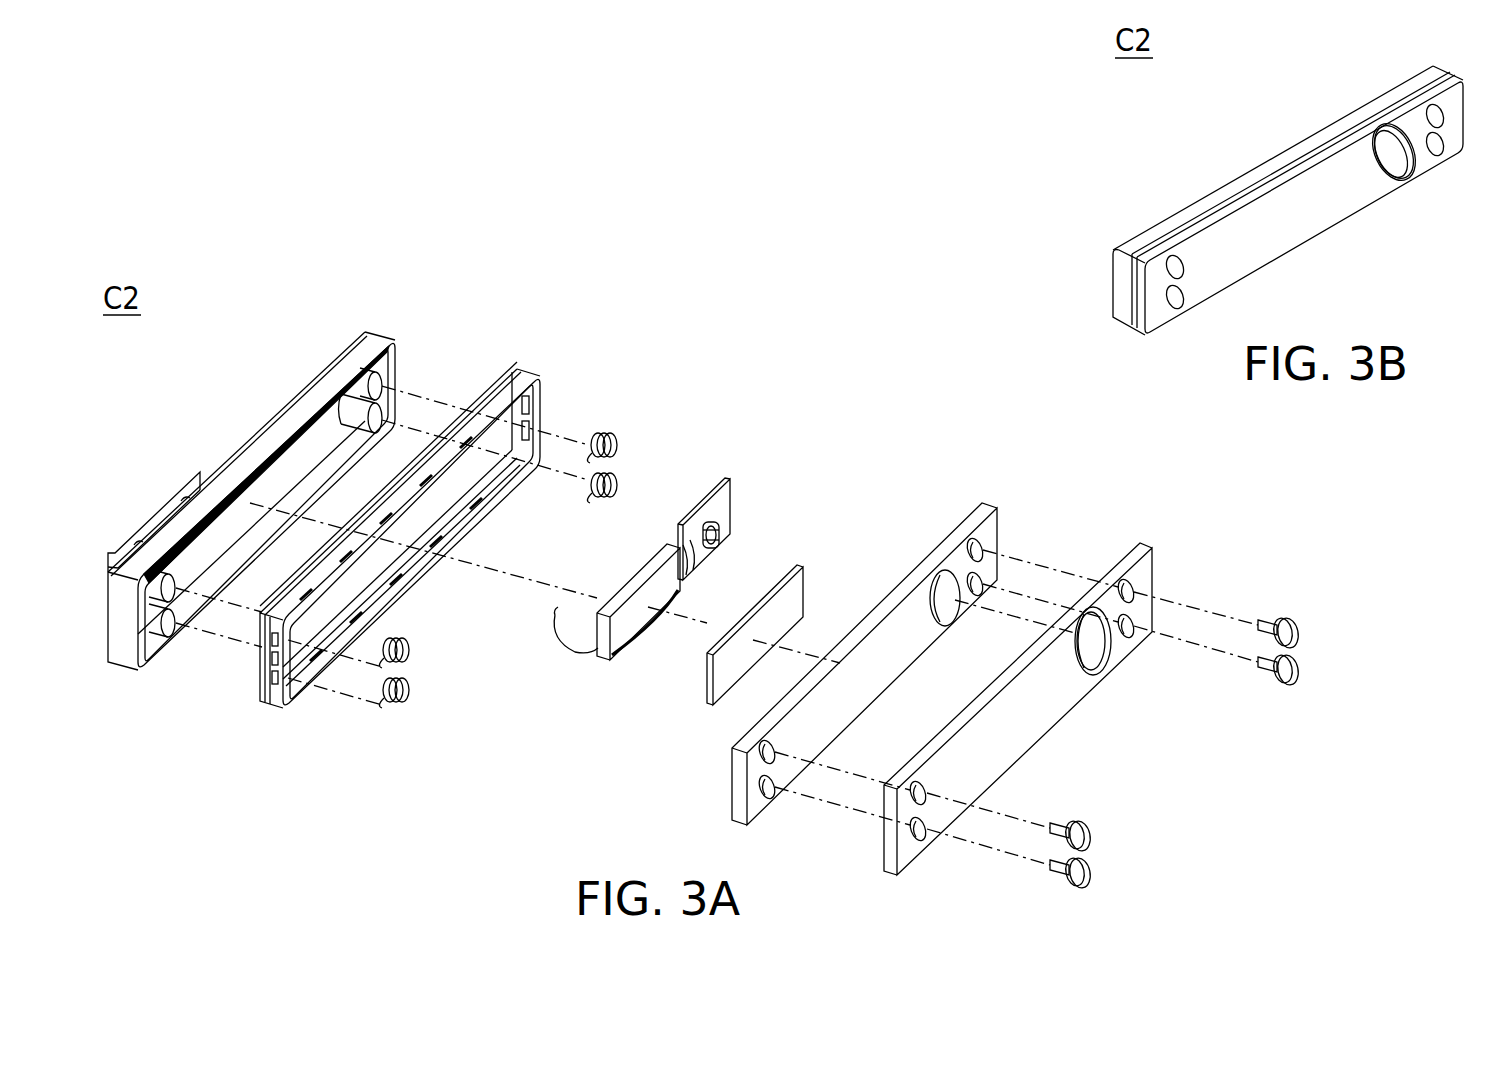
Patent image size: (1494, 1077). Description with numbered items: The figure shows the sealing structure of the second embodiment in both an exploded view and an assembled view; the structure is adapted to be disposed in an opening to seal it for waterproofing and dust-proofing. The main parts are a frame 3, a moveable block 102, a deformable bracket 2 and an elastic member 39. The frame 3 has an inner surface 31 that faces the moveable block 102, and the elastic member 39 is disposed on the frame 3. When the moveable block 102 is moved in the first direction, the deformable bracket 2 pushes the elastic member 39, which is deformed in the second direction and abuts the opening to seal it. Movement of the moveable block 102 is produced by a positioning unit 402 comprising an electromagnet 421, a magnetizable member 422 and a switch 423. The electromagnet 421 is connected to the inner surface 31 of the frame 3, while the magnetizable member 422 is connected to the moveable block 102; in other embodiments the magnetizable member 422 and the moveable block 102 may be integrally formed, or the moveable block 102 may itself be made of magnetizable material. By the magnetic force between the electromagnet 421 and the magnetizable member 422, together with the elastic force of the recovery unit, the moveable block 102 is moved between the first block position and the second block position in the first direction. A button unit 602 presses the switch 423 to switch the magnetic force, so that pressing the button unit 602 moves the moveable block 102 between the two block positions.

In FIG. 3A, the deformable bracket 2 is at (277, 712).
In FIG. 3A, the frame 3 is at (270, 422).
In FIG. 3B, the frame 3 is at (1272, 165).
In FIG. 3A, the inner surface 31 is at (228, 533).
In FIG. 3A, the elastic member 39 is at (123, 653).
In FIG. 3B, the elastic member 39 is at (1126, 300).
In FIG. 3A, the moveable block 102 is at (882, 655).
In FIG. 3A, the positioning unit 402 is at (640, 562).
In FIG. 3A, the electromagnet 421 is at (600, 665).
In FIG. 3A, the magnetizable member 422 is at (790, 595).
In FIG. 3A, the switch 423 is at (712, 520).
In FIG. 3A, the button unit 602 is at (1093, 648).
In FIG. 3B, the button unit 602 is at (1408, 168).